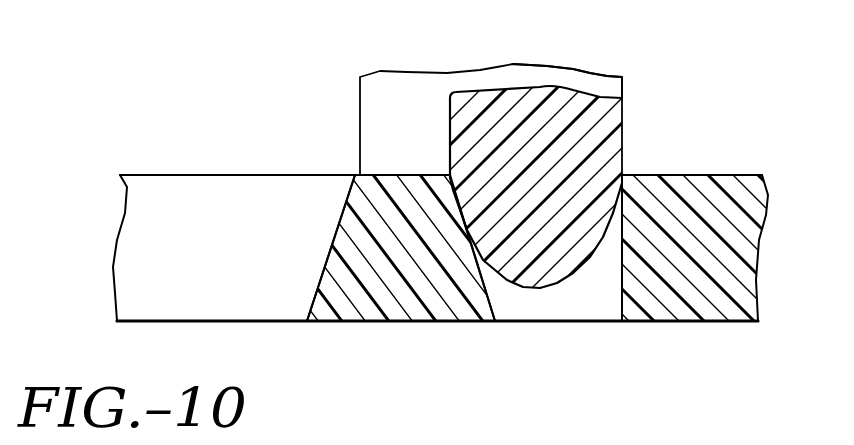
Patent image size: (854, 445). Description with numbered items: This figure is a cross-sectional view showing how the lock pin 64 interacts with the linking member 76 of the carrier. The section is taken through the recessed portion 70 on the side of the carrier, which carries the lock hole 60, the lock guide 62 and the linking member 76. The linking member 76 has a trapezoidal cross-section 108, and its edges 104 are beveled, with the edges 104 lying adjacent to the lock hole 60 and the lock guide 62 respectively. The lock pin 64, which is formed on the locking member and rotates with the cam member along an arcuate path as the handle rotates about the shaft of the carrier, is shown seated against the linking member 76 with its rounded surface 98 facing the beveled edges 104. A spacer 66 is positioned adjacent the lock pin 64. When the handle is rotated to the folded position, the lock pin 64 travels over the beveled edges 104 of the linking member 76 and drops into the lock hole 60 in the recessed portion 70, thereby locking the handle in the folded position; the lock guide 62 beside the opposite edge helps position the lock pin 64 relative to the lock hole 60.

The lock hole 60 is at (620, 303).
The lock guide 62 is at (224, 186).
The lock pin 64 is at (623, 137).
The spacer 66 is at (614, 86).
The recessed portion 70 is at (736, 185).
The linking member 76 is at (405, 313).
The rounded surface 98 is at (578, 100).
The edges 104 is at (320, 293).
The trapezoidal cross-section 108 is at (342, 305).